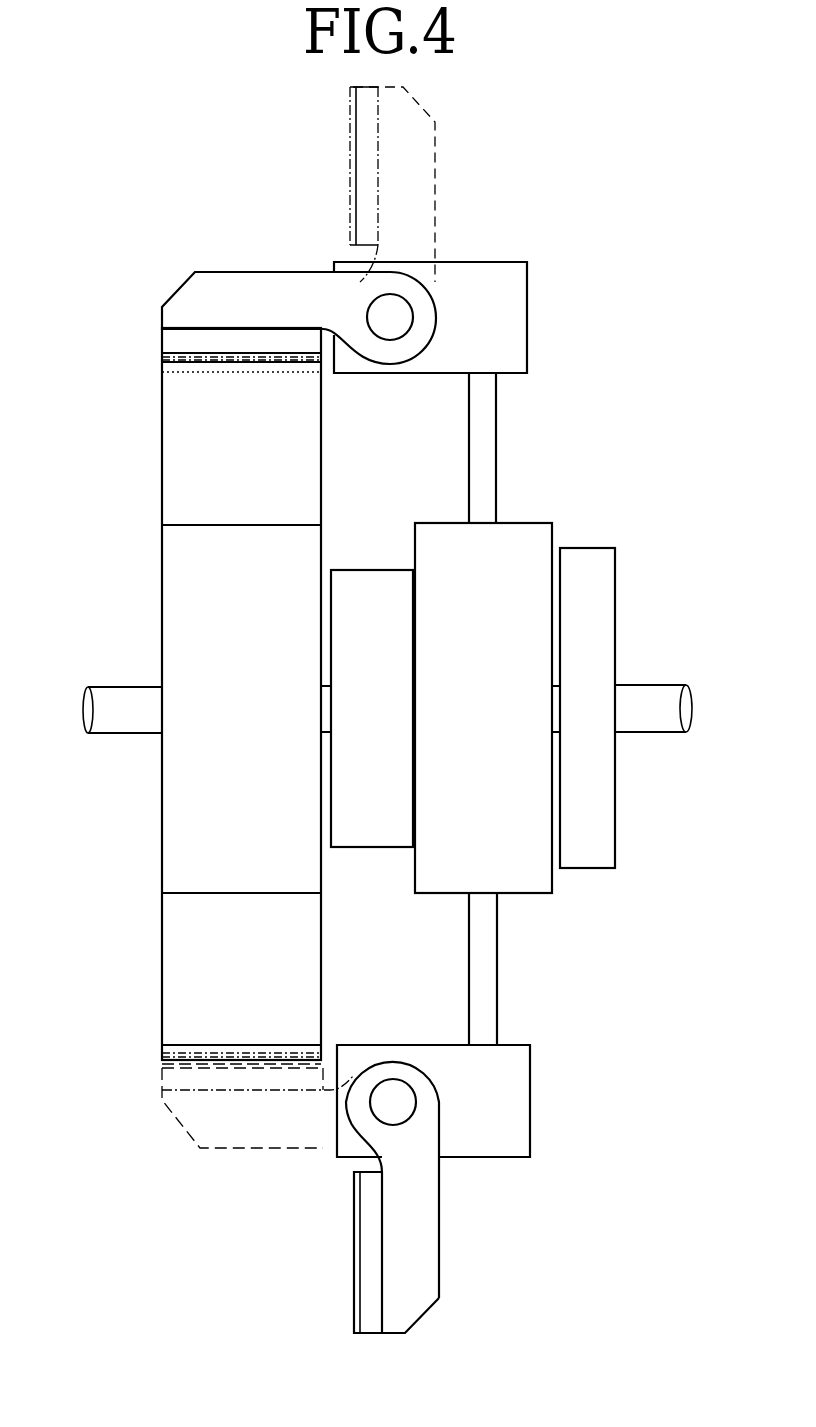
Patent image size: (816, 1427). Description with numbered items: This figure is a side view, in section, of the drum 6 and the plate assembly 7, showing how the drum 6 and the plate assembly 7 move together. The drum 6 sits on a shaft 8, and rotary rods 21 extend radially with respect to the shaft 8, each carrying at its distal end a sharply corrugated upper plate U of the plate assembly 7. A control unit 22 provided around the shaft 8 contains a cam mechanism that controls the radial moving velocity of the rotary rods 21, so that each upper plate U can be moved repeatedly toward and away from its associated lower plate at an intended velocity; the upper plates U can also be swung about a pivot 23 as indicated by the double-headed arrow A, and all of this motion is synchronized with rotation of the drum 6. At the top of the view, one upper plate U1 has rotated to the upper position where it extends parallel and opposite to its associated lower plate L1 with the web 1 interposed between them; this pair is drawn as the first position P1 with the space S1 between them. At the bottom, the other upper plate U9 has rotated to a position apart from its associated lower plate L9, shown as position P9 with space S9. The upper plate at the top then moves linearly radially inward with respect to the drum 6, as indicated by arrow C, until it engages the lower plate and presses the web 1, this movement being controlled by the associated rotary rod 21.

The web 1 is at (208, 353).
The drum 6 is at (160, 808).
The plate assembly 7 is at (477, 230).
The shaft 8 is at (118, 720).
The rotary rod 21 is at (483, 430).
The control unit 22 is at (527, 542).
The pivot 23 is at (397, 327).
The double-headed arrow A is at (312, 147).
The arrow C is at (326, 330).
The sharply corrugated upper plate U is at (367, 95).
The sharply corrugated upper plate U1 is at (182, 343).
The sharply corrugated lower plate L1 is at (162, 365).
The sharply corrugated upper plate U9 is at (357, 1247).
The sharply corrugated lower plate L9 is at (182, 1052).
The first pallet P1 is at (140, 473).
The ninth pallet P9 is at (160, 942).
The first stacking space S1 is at (297, 475).
The ninth stacking space S9 is at (297, 968).